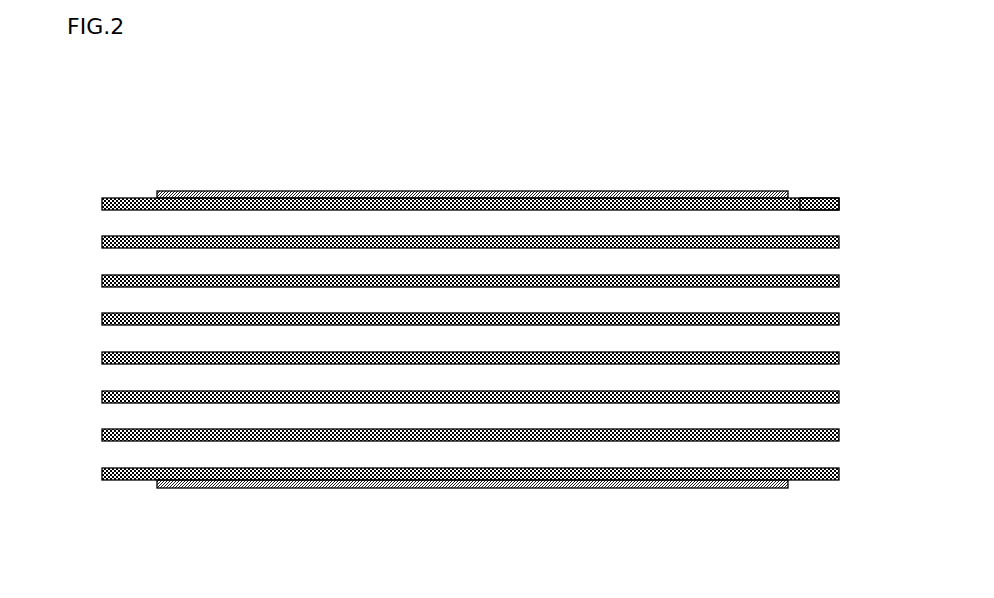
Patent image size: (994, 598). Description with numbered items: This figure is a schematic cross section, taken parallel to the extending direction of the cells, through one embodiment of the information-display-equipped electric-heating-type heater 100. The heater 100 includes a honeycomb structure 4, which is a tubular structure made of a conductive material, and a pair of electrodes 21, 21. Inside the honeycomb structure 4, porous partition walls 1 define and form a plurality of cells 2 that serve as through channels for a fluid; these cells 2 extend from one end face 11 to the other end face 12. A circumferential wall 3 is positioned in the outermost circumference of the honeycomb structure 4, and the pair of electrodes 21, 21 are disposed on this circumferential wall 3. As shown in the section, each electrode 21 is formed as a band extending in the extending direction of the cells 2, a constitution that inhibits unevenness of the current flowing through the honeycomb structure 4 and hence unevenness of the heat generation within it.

The electric-heating-type heater 100 is at (848, 79).
The partition wall 1 is at (437, 442).
The cell 2 is at (157, 262).
The one end face 11 is at (104, 206).
The the other end face 12 is at (840, 206).
The electrode 21 is at (366, 189).
The circumferential wall 3 is at (583, 488).
The honeycomb structure 4 is at (220, 196).